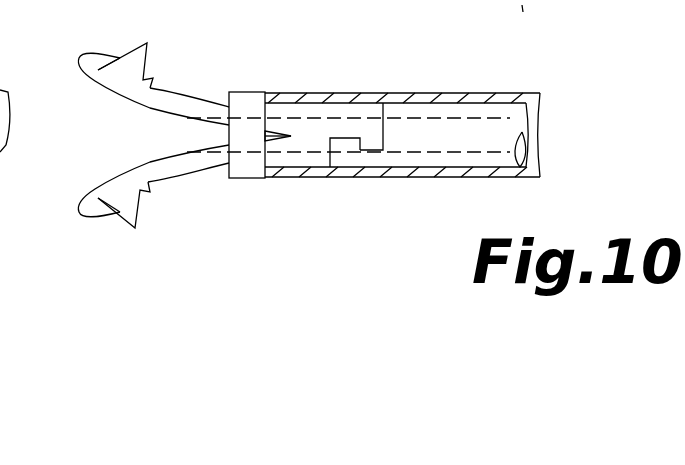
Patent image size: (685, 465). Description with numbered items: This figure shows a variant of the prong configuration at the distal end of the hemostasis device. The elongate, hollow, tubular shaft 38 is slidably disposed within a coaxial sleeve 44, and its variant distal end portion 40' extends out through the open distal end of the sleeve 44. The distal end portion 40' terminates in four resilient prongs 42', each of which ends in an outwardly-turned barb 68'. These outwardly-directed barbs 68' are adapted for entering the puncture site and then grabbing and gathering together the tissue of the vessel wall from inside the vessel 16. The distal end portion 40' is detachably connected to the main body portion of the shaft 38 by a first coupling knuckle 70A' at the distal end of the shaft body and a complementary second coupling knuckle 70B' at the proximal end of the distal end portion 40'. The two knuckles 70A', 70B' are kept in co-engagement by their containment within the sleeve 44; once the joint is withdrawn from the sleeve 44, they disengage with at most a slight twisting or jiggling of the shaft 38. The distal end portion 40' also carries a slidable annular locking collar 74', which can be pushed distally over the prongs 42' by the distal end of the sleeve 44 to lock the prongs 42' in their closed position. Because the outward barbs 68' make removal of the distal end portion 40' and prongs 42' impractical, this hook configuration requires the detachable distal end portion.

The vessel 16 is at (17, 77).
The shaft 38 is at (461, 166).
The variant distal end portion 40' is at (348, 91).
The resilient prongs 42' is at (136, 135).
The sleeve 44 is at (455, 95).
The outwardly-turned barb 68' is at (140, 134).
The first coupling knuckle 70A' is at (332, 185).
The second coupling knuckle 70B' is at (395, 166).
The locking collar 74' is at (250, 106).